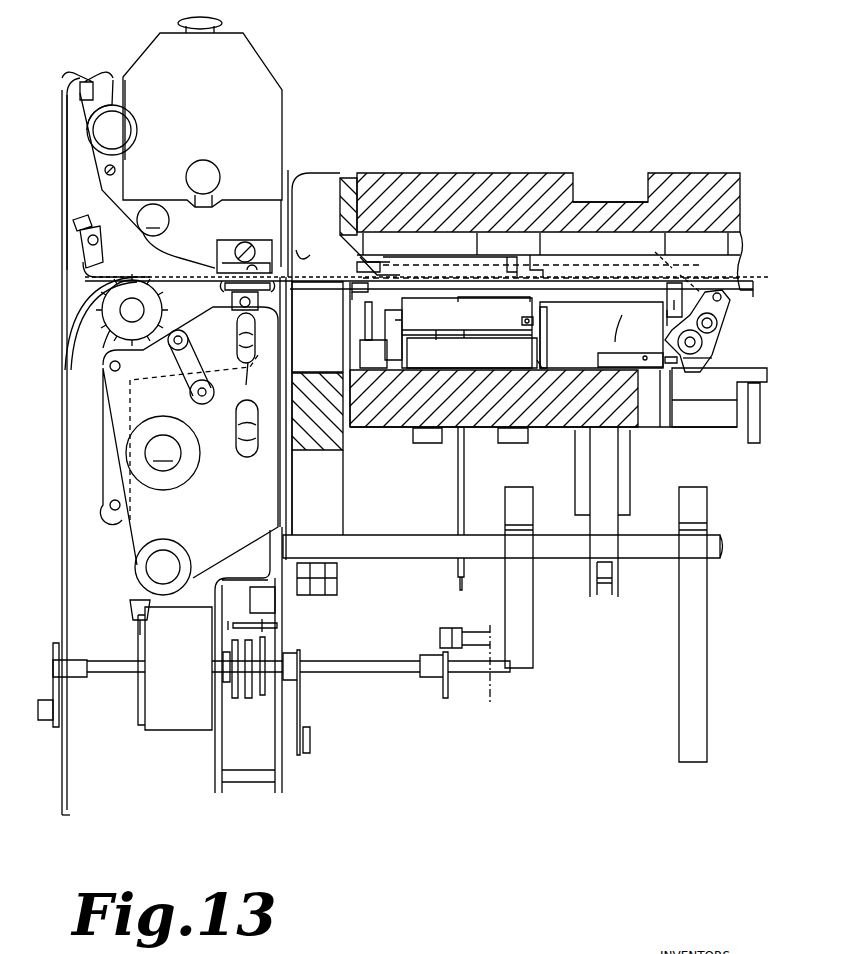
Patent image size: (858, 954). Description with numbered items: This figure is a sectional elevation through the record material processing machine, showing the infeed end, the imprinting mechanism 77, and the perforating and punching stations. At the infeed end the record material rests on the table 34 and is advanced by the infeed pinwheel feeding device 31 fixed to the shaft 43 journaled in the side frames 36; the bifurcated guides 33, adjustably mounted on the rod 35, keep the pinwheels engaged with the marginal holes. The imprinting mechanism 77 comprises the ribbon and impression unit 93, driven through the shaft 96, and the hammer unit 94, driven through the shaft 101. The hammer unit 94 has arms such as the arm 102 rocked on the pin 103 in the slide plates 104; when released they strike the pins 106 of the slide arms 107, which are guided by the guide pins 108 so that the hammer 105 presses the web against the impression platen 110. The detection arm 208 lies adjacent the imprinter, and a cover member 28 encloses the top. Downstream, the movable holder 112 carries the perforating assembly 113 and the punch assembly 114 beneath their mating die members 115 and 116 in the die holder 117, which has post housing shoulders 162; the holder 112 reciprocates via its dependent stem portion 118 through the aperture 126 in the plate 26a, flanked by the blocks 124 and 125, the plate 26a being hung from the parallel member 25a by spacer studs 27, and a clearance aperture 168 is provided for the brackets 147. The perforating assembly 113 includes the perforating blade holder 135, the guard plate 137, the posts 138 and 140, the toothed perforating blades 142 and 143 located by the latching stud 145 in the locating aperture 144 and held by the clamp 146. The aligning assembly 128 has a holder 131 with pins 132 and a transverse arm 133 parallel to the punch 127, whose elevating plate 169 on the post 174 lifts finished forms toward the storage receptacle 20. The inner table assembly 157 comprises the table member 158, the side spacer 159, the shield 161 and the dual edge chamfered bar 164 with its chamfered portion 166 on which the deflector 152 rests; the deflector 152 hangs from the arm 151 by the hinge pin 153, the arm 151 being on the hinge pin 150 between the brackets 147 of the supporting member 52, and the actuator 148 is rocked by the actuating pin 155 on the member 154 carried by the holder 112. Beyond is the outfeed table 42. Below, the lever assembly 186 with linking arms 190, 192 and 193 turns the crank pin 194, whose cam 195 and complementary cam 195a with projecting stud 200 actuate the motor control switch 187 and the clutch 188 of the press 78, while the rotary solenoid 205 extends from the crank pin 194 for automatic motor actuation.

The storage receptacle 20 is at (580, 183).
The parallel member 25a is at (310, 445).
The plate 26a is at (365, 560).
The spacer studs 27 is at (343, 518).
The cover member 28 is at (318, 173).
The infeed pinwheel feeding device 31 is at (100, 340).
The bifurcated guides 33 is at (86, 268).
The table 34 is at (62, 330).
The rod 35 is at (88, 240).
The side frames 36 is at (68, 212).
The table 42 is at (745, 272).
The shaft 43 is at (132, 310).
The supporting member 52 is at (750, 298).
The imprinting mechanism 77 is at (283, 66).
The press 78 is at (490, 710).
The ribbon and impression unit 93 is at (105, 186).
The hammer unit 94 is at (222, 288).
The shaft 96 is at (153, 220).
The shaft 101 is at (170, 410).
The arm 102 is at (105, 470).
The pin 103 is at (110, 366).
The slide plates 104 is at (130, 530).
The hammer 105 is at (232, 304).
The pins 106 is at (240, 343).
The slide arms 107 is at (249, 381).
The guide pins 108 is at (240, 432).
The impression platen 110 is at (222, 265).
The movable holder 112 is at (362, 427).
The perforating assembly 113 is at (390, 307).
The punch assembly 114 is at (537, 362).
The die member 115 is at (398, 251).
The die member 116 is at (746, 249).
The die holder 117 is at (742, 210).
The dependent stem portion 118 is at (575, 468).
The block 124 is at (679, 655).
The block 125 is at (533, 640).
The aperture 126 is at (548, 555).
The punch 127 is at (604, 334).
The aligning assembly 128 is at (342, 355).
The holder 131 is at (400, 365).
The pins 132 is at (365, 320).
The transverse arm 133 is at (547, 342).
The perforating blade holder 135 is at (464, 338).
The guard plate 137 is at (436, 340).
The post 138 is at (425, 445).
The post 140 is at (512, 445).
The perforating blade 142 is at (410, 298).
The perforating blade 143 is at (457, 298).
The locating aperture 144 is at (522, 321).
The latching stud 145 is at (530, 320).
The clamp 146 is at (373, 355).
The bracket 147 is at (712, 358).
The actuator 148 is at (690, 373).
The hinge pin 150 is at (700, 342).
The arm 151 is at (715, 312).
The deflector 152 is at (672, 265).
The hinge pin 153 is at (720, 297).
The member 154 is at (598, 358).
The actuating pin 155 is at (663, 363).
The inner table assembly 157 is at (352, 296).
The table member 158 is at (362, 286).
The side spacer 159 is at (443, 265).
The shield 161 is at (420, 256).
The post housing shoulders 162 is at (372, 272).
The dual edge chamfered bar 164 is at (667, 326).
The chamfered portion 166 is at (671, 300).
The clearance aperture 168 is at (645, 427).
The elevating plate 169 is at (619, 335).
The post 174 is at (612, 587).
The lever assembly 186 is at (304, 771).
The motor control switch 187 is at (278, 602).
The clutch 188 is at (440, 632).
The linking arm 190 is at (50, 730).
The linking arm 192 is at (310, 736).
The linking arm 193 is at (300, 708).
The crank pin 194 is at (388, 672).
The cam 195 is at (263, 698).
The complementary cam 195a is at (248, 700).
The projecting stud 200 is at (240, 690).
The rotary solenoid 205 is at (160, 730).
The detection arm 208 is at (250, 245).